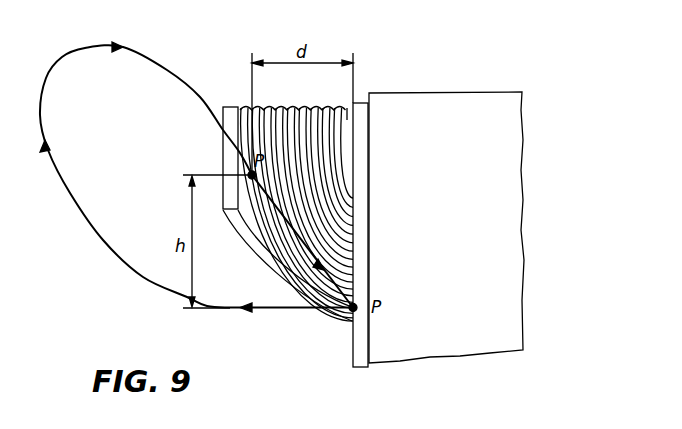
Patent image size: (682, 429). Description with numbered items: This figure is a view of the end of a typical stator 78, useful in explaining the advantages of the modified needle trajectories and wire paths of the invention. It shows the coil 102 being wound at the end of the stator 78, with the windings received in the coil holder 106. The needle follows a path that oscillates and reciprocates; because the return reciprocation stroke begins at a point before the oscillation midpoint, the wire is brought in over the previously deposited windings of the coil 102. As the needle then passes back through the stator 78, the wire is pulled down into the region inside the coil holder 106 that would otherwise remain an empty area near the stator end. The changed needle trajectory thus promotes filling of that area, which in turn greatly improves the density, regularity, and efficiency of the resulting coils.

The coil 102 is at (337, 118).
The coil holder 106 is at (273, 268).
The stator 78 is at (513, 222).